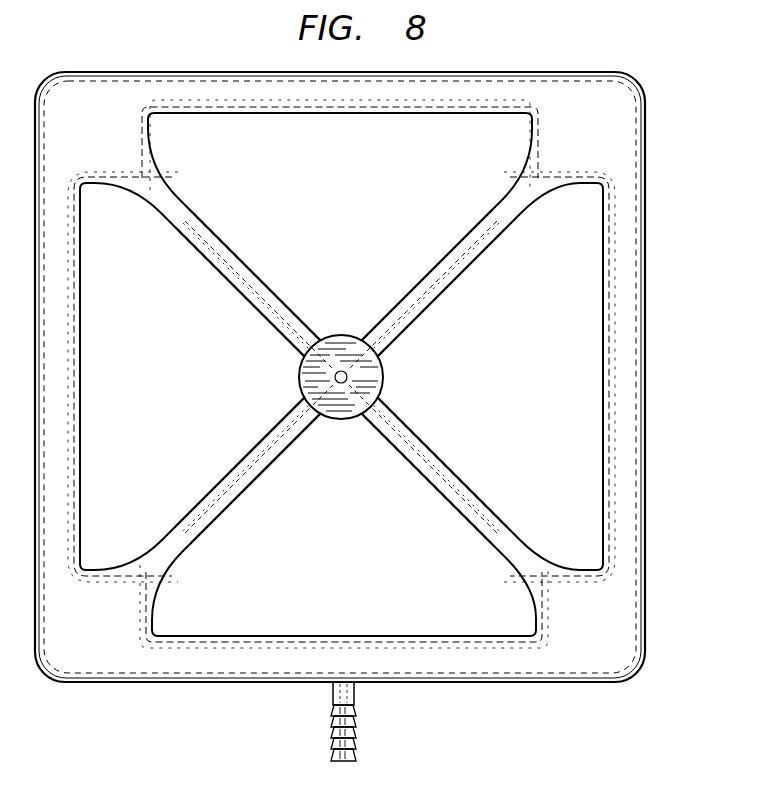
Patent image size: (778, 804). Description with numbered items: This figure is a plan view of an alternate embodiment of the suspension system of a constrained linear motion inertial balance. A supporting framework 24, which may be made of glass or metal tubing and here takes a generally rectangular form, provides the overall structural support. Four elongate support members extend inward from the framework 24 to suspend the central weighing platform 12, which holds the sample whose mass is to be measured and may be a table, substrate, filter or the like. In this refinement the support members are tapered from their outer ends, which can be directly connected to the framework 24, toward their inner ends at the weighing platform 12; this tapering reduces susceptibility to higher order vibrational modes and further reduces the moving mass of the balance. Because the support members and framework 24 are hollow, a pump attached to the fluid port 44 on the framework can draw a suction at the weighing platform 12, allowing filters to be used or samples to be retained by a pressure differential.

The weighing platform 12 is at (381, 378).
The supporting framework 24 is at (645, 428).
The fluid port 44 is at (355, 733).